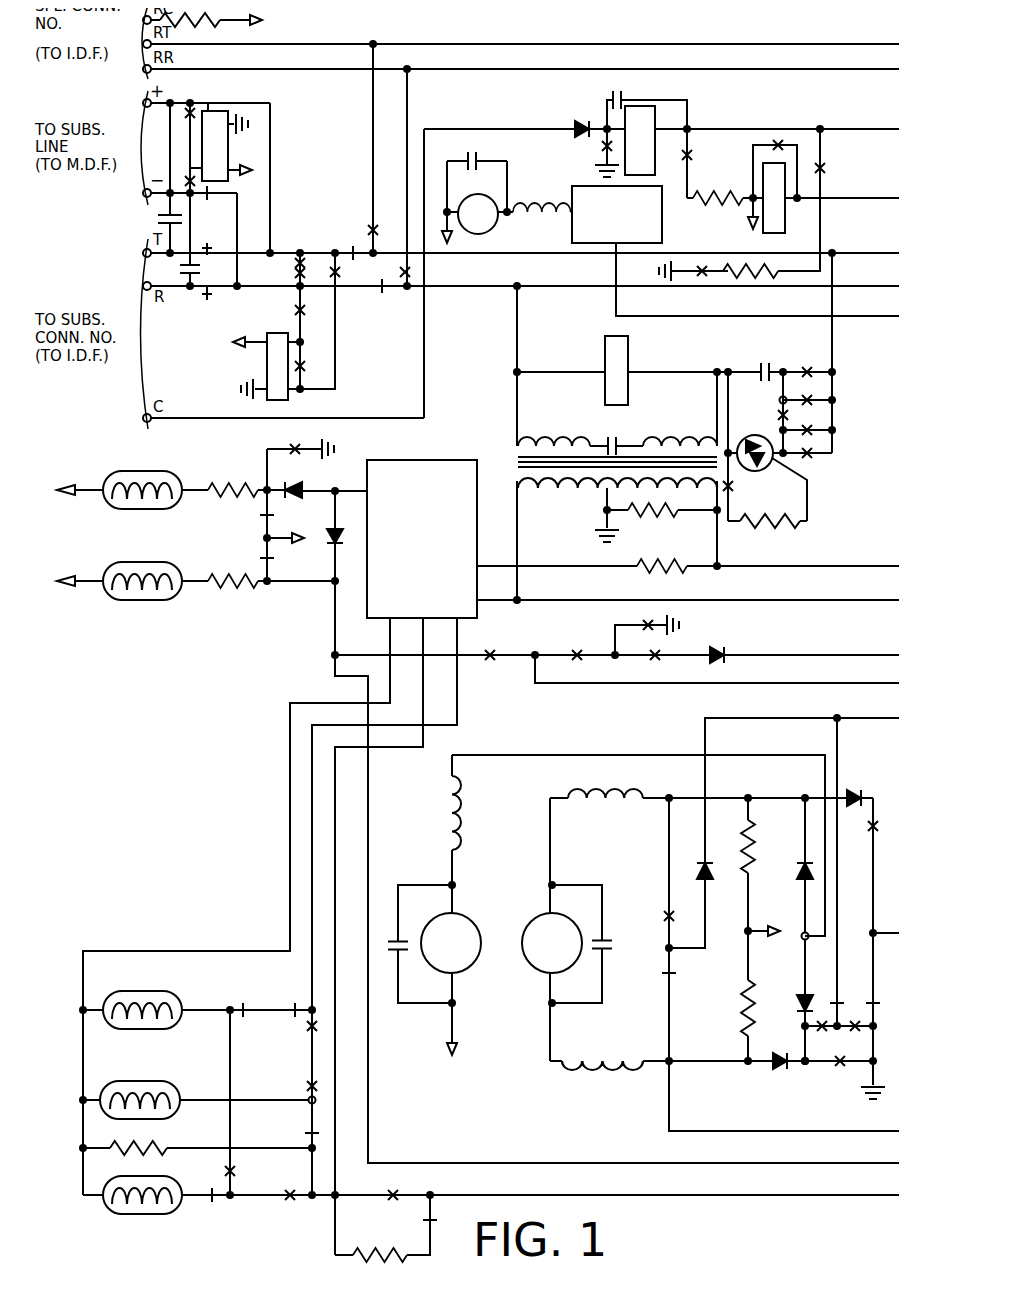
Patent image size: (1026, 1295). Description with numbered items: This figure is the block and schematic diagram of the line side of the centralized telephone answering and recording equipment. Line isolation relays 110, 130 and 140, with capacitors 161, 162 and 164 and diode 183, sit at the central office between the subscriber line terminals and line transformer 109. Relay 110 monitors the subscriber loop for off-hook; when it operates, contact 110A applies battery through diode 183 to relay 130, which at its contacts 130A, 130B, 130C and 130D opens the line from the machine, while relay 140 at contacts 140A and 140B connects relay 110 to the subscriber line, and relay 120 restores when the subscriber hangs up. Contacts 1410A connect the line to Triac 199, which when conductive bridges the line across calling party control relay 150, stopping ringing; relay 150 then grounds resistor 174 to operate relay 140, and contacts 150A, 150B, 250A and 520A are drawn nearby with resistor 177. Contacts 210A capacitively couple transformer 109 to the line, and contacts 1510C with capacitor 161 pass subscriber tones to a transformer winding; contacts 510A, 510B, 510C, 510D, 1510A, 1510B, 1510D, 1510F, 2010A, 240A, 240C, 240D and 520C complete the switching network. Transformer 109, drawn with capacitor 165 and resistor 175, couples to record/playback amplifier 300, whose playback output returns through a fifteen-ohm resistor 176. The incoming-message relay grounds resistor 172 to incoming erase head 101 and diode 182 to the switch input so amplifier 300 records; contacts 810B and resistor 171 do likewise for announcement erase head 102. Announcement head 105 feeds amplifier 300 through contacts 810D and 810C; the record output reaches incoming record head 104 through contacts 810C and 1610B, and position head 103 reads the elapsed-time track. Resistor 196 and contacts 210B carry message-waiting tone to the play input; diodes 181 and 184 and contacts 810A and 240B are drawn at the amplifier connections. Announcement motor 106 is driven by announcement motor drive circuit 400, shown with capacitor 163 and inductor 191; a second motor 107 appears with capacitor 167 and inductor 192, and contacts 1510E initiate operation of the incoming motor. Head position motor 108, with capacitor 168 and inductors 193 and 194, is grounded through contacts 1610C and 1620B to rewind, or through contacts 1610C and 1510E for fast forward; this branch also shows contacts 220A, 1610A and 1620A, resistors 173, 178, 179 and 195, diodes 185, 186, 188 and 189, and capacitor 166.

The incoming erase head 101 is at (127, 560).
The announcement erase head 102 is at (125, 469).
The position head 103 is at (152, 1178).
The incoming record head 104 is at (128, 990).
The announcement tape head 105 is at (127, 1080).
The announcement motor 106 is at (486, 232).
The motor 107 is at (458, 975).
The head position motor 108 is at (536, 912).
The line transformer 109 is at (518, 448).
The relay 110 is at (227, 142).
The relay 120 is at (268, 366).
The relay 130 is at (751, 140).
The relay 140 is at (823, 198).
The calling party control relay 150 is at (637, 370).
The record/playback amplifier 300 is at (422, 539).
The announcement motor drive circuit 400 is at (735, 251).
The capacitor 161 is at (160, 212).
The capacitor 162 is at (180, 266).
The capacitor 163 is at (477, 150).
The capacitor 164 is at (626, 92).
The capacitor 165 is at (620, 434).
The capacitor 166 is at (764, 360).
The capacitor 167 is at (416, 935).
The capacitor 168 is at (605, 946).
The resistor 171 is at (215, 480).
The resistor 172 is at (220, 587).
The resistor 173 is at (712, 199).
The resistor 174 is at (770, 276).
The resistor 175 is at (650, 518).
The resistor 176 is at (658, 573).
The resistor 177 is at (778, 528).
The resistor 178 is at (754, 835).
The resistor 179 is at (744, 1011).
The resistor 195 is at (128, 1142).
The resistor 196 is at (368, 1250).
The diode 181 is at (296, 484).
The diode 182 is at (328, 532).
The diode 183 is at (580, 118).
The diode 184 is at (718, 648).
The diode 185 is at (711, 866).
The diode 186 is at (800, 876).
The diode 188 is at (772, 1064).
The diode 189 is at (800, 990).
The inductor 191 is at (540, 202).
The inductor 192 is at (462, 794).
The inductor 193 is at (608, 785).
The inductor 194 is at (595, 1076).
The Triac 199 is at (760, 468).
The contact of relay 110 110A is at (690, 154).
The relay contact 130A is at (226, 236).
The relay contact 130B is at (205, 292).
The relay contact 130C is at (603, 143).
The relay contact 130D is at (772, 142).
The contacts of relay 140 140A is at (194, 106).
The contacts of relay 140 140B is at (192, 185).
The relay contact 150A is at (716, 244).
The relay contact 150B is at (490, 648).
The relay contact 510A is at (352, 244).
The relay contact 510B is at (295, 265).
The relay contact 510C is at (368, 226).
The relay contact 510D is at (388, 278).
The relay contact 1510A is at (295, 308).
The relay contact 1510B is at (822, 162).
The contacts of relay 1510 1510C is at (812, 396).
The relay contact 1510D is at (832, 412).
The contacts of relay 1510 1510E is at (823, 1027).
The relay contact 1510F is at (331, 274).
The relay contact 2010A is at (305, 366).
The relay contact 810A is at (261, 512).
The contacts of relay 810 810B is at (289, 444).
The contacts of relay 810 810C is at (307, 1023).
The contacts of relay 810 810D is at (307, 1083).
The relay contact 240A is at (812, 427).
The relay contact 240B is at (261, 555).
The relay contact 240C is at (582, 650).
The relay contact 240D is at (843, 1066).
The relay contact 520A is at (784, 412).
The relay contact 520C is at (648, 620).
The contacts of relay 210 210A is at (820, 345).
The contacts of relay 210 210B is at (398, 1190).
The contacts of relay 1410 1410A is at (810, 452).
The relay contact 220A is at (662, 970).
The relay contact 250A is at (733, 487).
The relay contact 1610A is at (290, 1187).
The contacts of relay 1610 1610B is at (246, 1003).
The contacts of relay 1610 1610C is at (860, 1018).
The relay contact 1620A is at (233, 1162).
The contacts of relay 1620 1620B is at (876, 826).